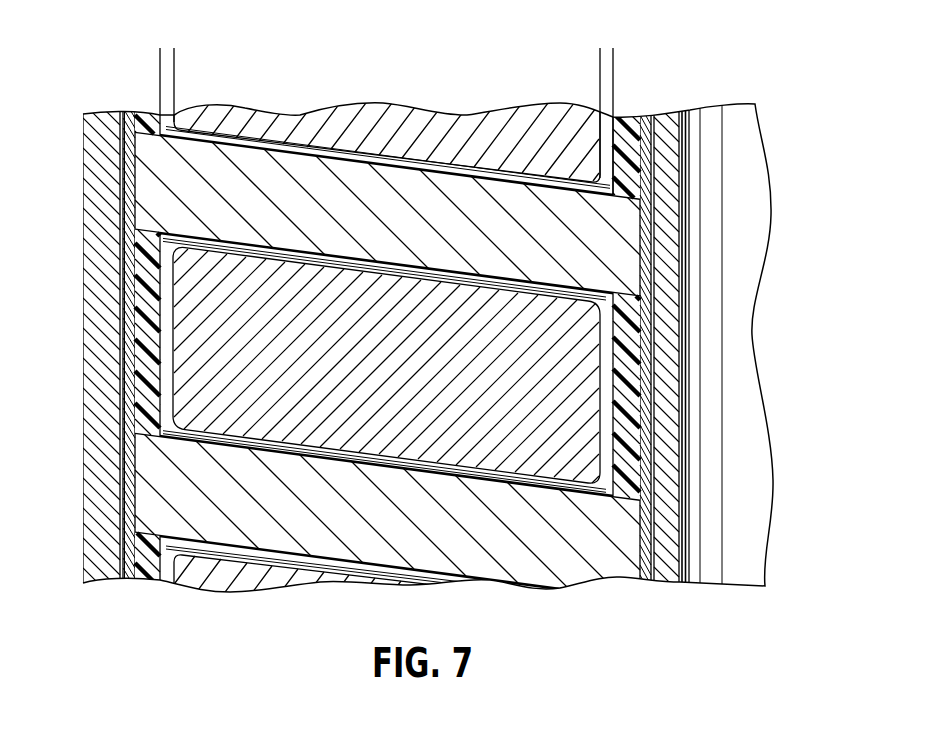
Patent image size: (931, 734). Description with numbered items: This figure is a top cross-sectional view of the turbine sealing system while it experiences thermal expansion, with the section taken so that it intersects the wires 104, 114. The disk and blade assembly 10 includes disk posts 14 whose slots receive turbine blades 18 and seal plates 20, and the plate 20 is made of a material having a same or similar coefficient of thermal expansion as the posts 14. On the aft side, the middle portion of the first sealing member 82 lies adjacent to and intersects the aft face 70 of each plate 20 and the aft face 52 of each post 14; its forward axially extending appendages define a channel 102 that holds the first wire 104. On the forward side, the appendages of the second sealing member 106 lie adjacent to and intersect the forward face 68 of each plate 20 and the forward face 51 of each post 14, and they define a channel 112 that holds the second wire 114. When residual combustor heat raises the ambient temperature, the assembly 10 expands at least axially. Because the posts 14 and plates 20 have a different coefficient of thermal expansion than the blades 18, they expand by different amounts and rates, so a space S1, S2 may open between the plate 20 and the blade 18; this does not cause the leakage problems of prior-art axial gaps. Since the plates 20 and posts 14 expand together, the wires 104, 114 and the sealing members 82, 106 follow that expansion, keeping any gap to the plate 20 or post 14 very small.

The disk and blade assembly 10 is at (682, 68).
The disk post 14 is at (616, 252).
The turbine blade 18 is at (600, 358).
The seal plate 20 is at (140, 342).
The forward face of post 51 is at (641, 216).
The aft face of post 52 is at (135, 218).
The forward face of plate 68 is at (652, 310).
The aft face of plate 70 is at (135, 261).
The first sealing member 82 is at (100, 405).
The channel of first sealing member 102 is at (127, 188).
The first wire 104 is at (127, 300).
The second sealing member 106 is at (682, 192).
The channel of second sealing member 112 is at (660, 133).
The second wire 114 is at (648, 545).
The space between plate and blade S1 is at (214, 58).
The space between plate and blade S2 is at (562, 58).